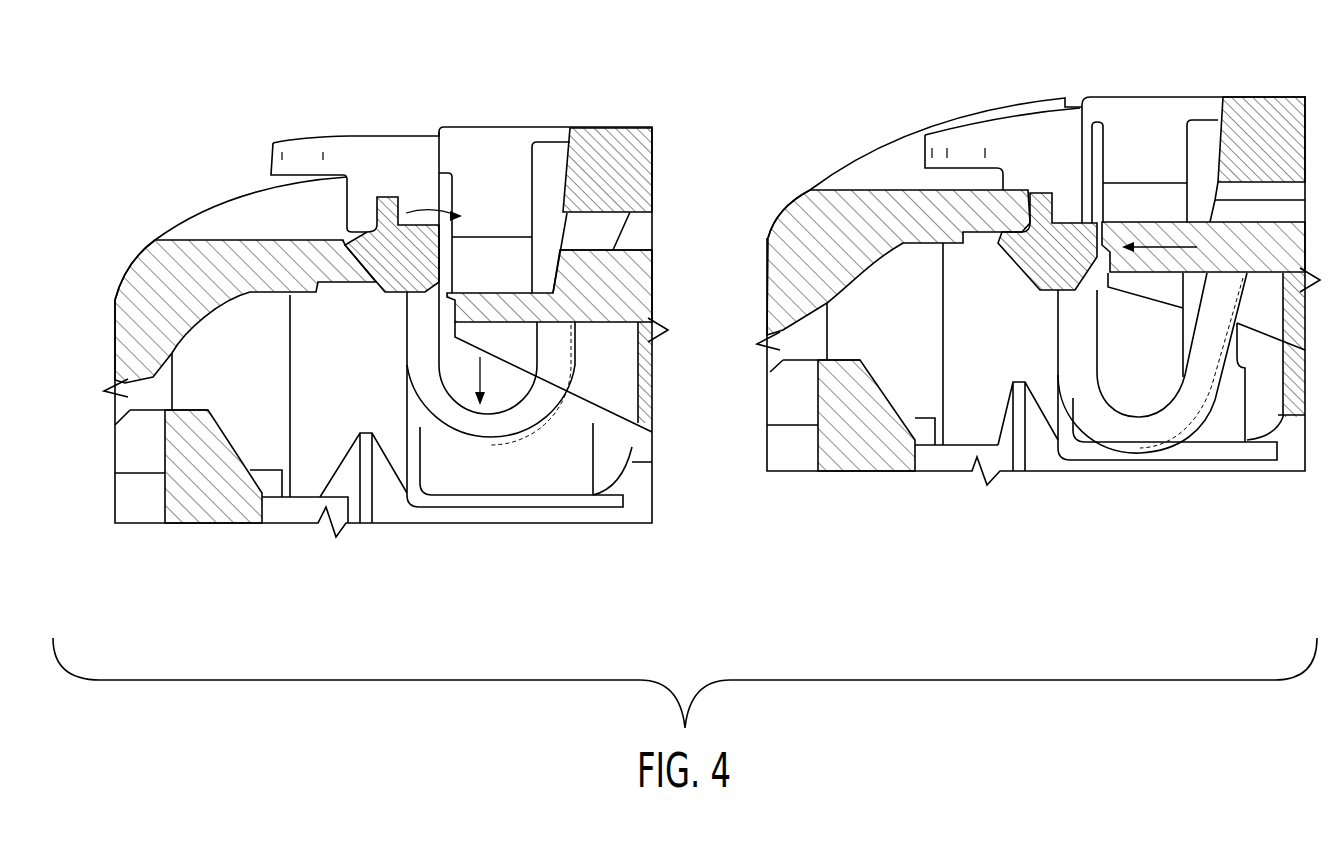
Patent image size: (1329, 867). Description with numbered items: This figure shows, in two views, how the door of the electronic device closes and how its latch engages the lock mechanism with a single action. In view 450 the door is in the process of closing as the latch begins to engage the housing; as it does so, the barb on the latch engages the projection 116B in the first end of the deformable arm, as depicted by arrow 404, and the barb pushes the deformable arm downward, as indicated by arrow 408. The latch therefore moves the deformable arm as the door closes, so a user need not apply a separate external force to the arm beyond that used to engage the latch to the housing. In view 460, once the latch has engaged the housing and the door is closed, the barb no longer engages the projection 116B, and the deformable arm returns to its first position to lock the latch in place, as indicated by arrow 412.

The projection 116B is at (460, 291).
The arrow 404 is at (406, 213).
The arrow 408 is at (480, 371).
The arrow 412 is at (1195, 246).
The view 450 is at (386, 345).
The view 460 is at (1038, 307).